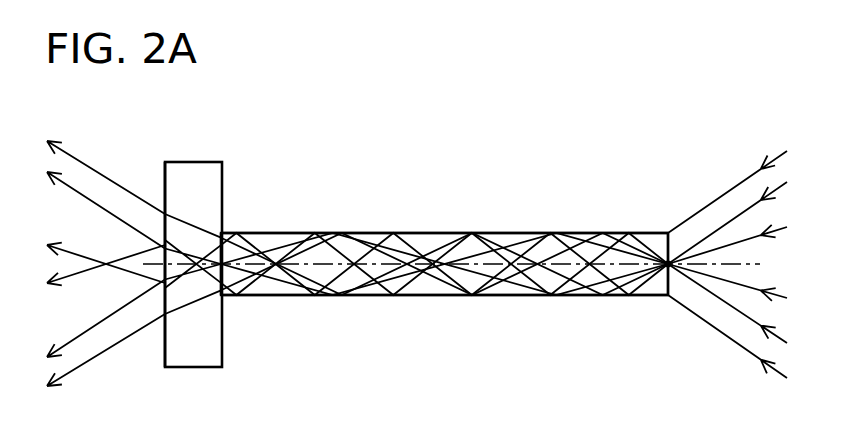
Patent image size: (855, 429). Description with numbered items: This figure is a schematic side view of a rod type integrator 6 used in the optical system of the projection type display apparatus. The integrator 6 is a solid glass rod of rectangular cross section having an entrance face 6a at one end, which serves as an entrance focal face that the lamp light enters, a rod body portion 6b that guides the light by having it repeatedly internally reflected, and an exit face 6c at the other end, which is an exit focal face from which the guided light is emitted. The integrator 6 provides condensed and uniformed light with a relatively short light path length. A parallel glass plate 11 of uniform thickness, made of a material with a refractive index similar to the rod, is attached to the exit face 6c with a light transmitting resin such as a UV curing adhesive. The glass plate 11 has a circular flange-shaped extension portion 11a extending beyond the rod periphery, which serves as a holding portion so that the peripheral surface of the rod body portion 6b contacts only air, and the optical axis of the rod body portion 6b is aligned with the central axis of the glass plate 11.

The integrator 6 is at (567, 233).
The entrance face 6a is at (668, 268).
The rod body portion 6b is at (505, 250).
The exit face 6c is at (234, 242).
The parallel glass plate 11 is at (224, 342).
The flange-shaped extension portion 11a is at (186, 178).